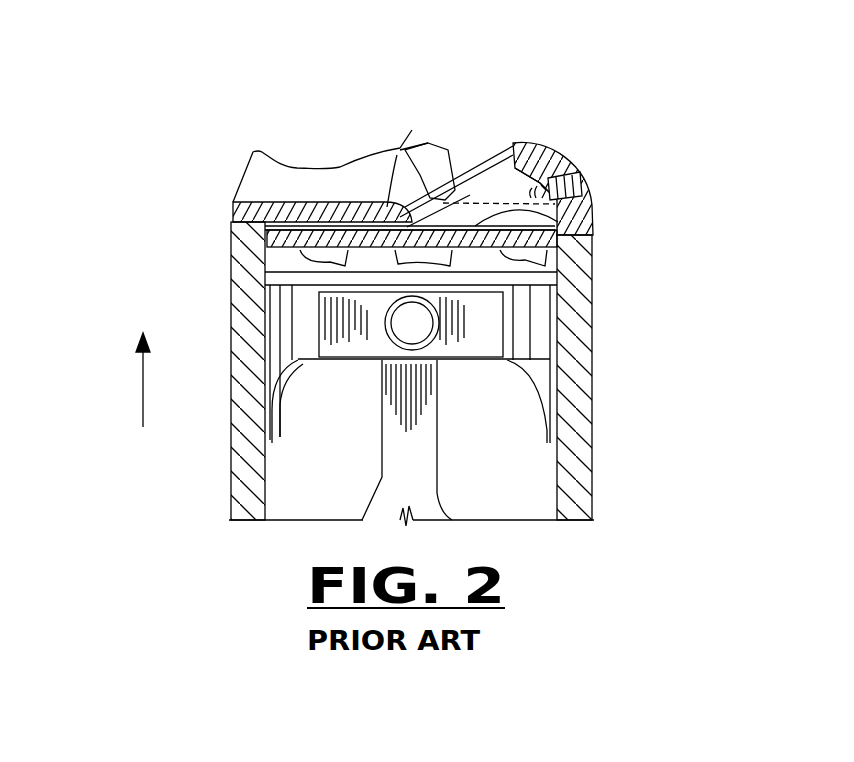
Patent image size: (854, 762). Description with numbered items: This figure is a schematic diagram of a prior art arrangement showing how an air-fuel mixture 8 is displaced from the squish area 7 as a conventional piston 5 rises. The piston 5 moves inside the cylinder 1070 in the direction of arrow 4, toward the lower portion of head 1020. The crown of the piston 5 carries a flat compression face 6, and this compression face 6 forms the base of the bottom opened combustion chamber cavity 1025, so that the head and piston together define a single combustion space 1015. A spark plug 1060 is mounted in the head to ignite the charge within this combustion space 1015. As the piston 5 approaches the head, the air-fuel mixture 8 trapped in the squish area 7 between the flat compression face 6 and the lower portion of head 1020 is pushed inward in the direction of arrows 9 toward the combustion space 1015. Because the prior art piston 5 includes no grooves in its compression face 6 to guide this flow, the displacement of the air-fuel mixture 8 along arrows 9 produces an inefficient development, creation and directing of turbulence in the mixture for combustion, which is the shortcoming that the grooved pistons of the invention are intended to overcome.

The lower portion of head 1020 is at (312, 202).
The squish area 7 is at (338, 202).
The arrows 9 is at (400, 148).
The single combustion space 1015 is at (492, 225).
The air-fuel mixture 8 is at (543, 148).
The spark plug 1060 is at (580, 177).
The compression face 6 is at (565, 223).
The base of bottom opened combustion chamber cavity 1025 is at (566, 264).
The piston 5 is at (485, 360).
The cylinder 1070 is at (545, 467).
The arrow 4 is at (140, 372).